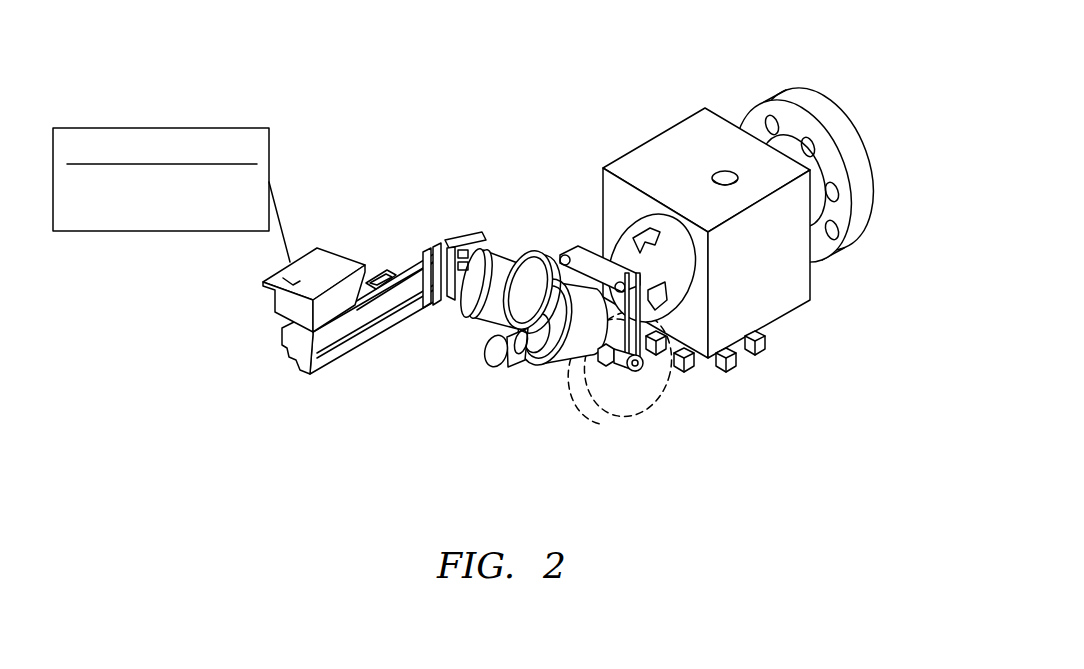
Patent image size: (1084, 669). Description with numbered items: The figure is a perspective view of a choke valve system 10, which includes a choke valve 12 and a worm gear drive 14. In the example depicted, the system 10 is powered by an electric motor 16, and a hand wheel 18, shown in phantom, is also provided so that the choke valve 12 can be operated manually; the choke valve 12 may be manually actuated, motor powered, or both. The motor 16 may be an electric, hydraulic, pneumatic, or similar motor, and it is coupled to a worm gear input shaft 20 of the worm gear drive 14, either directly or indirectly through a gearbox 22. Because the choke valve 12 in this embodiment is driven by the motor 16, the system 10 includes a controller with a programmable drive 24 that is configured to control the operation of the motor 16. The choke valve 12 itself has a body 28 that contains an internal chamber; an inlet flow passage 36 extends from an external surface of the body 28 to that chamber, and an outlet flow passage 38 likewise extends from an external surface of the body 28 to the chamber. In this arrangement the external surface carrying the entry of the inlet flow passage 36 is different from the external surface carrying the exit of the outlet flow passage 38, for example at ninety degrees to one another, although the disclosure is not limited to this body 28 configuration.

The choke valve system 10 is at (395, 50).
The choke valve 12 is at (774, 253).
The worm gear drive 14 is at (562, 363).
The motor 16 is at (347, 353).
The hand wheel 18 is at (653, 395).
The worm gear input shaft 20 is at (628, 378).
The gearbox 22 is at (480, 243).
The programmable drive 24 is at (216, 128).
The body 28 is at (788, 302).
The inlet flow passage 36 is at (743, 356).
The outlet flow passage 38 is at (863, 148).